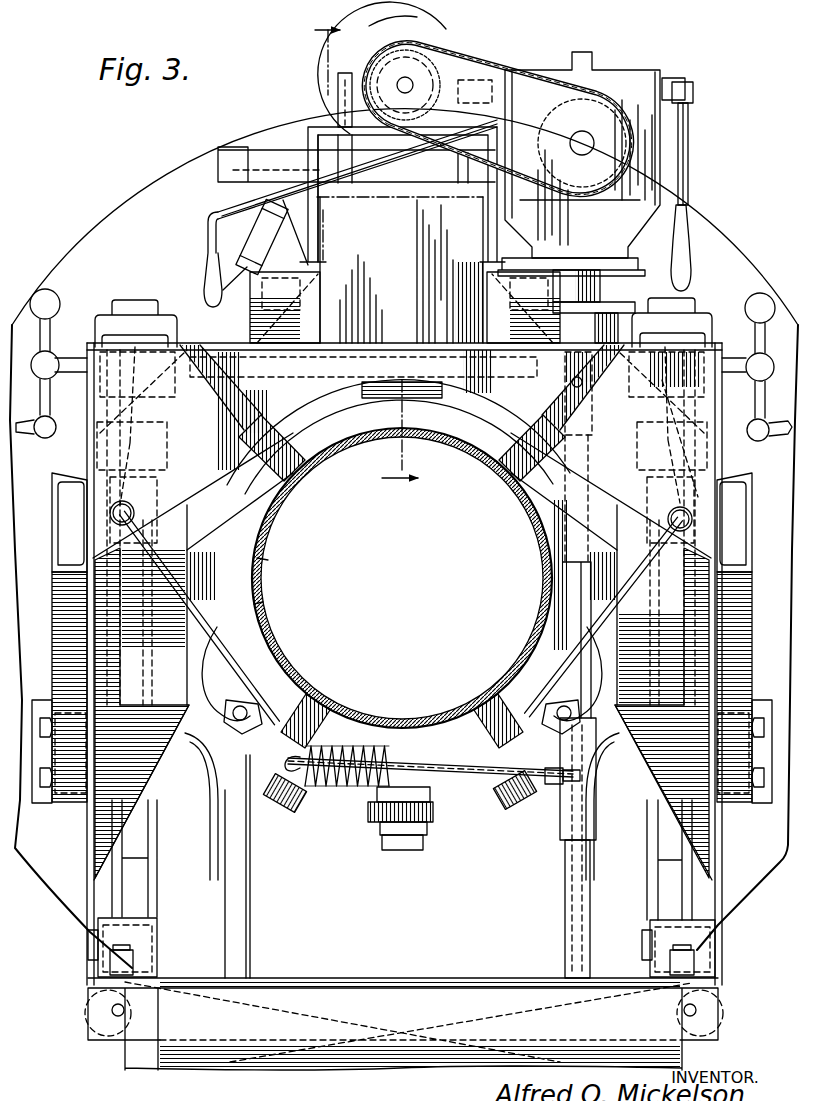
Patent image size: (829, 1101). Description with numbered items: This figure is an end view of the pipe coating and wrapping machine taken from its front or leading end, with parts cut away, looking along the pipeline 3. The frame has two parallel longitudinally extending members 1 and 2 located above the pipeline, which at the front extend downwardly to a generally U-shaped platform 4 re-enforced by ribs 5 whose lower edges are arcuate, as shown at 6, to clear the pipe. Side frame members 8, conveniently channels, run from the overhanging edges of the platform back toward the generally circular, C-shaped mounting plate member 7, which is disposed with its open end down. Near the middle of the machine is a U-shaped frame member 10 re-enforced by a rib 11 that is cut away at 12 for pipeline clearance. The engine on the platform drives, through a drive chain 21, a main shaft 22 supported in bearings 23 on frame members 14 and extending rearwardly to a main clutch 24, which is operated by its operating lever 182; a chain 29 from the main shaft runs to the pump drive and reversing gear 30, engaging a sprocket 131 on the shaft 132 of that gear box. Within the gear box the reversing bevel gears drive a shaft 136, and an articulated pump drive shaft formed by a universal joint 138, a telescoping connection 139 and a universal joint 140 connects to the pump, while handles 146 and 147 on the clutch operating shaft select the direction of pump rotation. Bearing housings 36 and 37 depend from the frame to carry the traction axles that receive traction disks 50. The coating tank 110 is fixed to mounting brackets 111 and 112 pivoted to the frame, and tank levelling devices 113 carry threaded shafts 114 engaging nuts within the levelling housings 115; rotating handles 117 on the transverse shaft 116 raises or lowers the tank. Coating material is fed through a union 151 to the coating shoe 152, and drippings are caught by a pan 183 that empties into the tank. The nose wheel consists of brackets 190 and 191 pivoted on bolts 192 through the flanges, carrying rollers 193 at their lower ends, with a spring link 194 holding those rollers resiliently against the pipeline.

The longitudinally extending frame member 1 is at (483, 230).
The longitudinally extending frame member 2 is at (320, 248).
The pipeline 3 is at (532, 550).
The platform 4 is at (447, 343).
The ribs 5 is at (172, 463).
The arcuate lower edge 6 is at (193, 579).
The mounting plate member 7 is at (37, 850).
The side frame members 8 is at (60, 530).
The U-shaped frame member 10 is at (112, 802).
The rib 11 is at (162, 676).
The cut-away 12 is at (173, 740).
The frame members 14 is at (307, 138).
The drive chain 21 is at (440, 34).
The main shaft 22 is at (431, 85).
The bearings 23 is at (345, 105).
The main clutch 24 is at (372, 29).
The chain 29 is at (487, 63).
The pump drive and reversing gear 30 is at (625, 68).
The bearing housing 36 is at (337, 447).
The bearing housing 37 is at (457, 443).
The traction disk 50 is at (307, 482).
The tank 110 is at (127, 1065).
The mounting bracket 111 is at (157, 922).
The mounting bracket 112 is at (655, 925).
The tank levelling device 113 is at (145, 847).
The threaded shaft 114 is at (78, 470).
The levelling housing 115 is at (135, 320).
The shaft 116 is at (322, 385).
The handles 117 is at (55, 298).
The sprocket 131 is at (582, 143).
The shaft 132 is at (582, 131).
The shaft 136 is at (600, 298).
The universal joint 138 is at (676, 462).
The telescoping connection 139 is at (547, 573).
The universal joint 140 is at (562, 822).
The handle 146 is at (208, 205).
The handle 147 is at (688, 175).
The union 151 is at (408, 850).
The coating shoe 152 is at (452, 748).
The operating lever 182 is at (247, 250).
The pan 183 is at (370, 923).
The bracket 190 is at (249, 648).
The bracket 191 is at (523, 683).
The bolts 192 is at (131, 507).
The rollers 193 is at (287, 805).
The spring link 194 is at (342, 790).